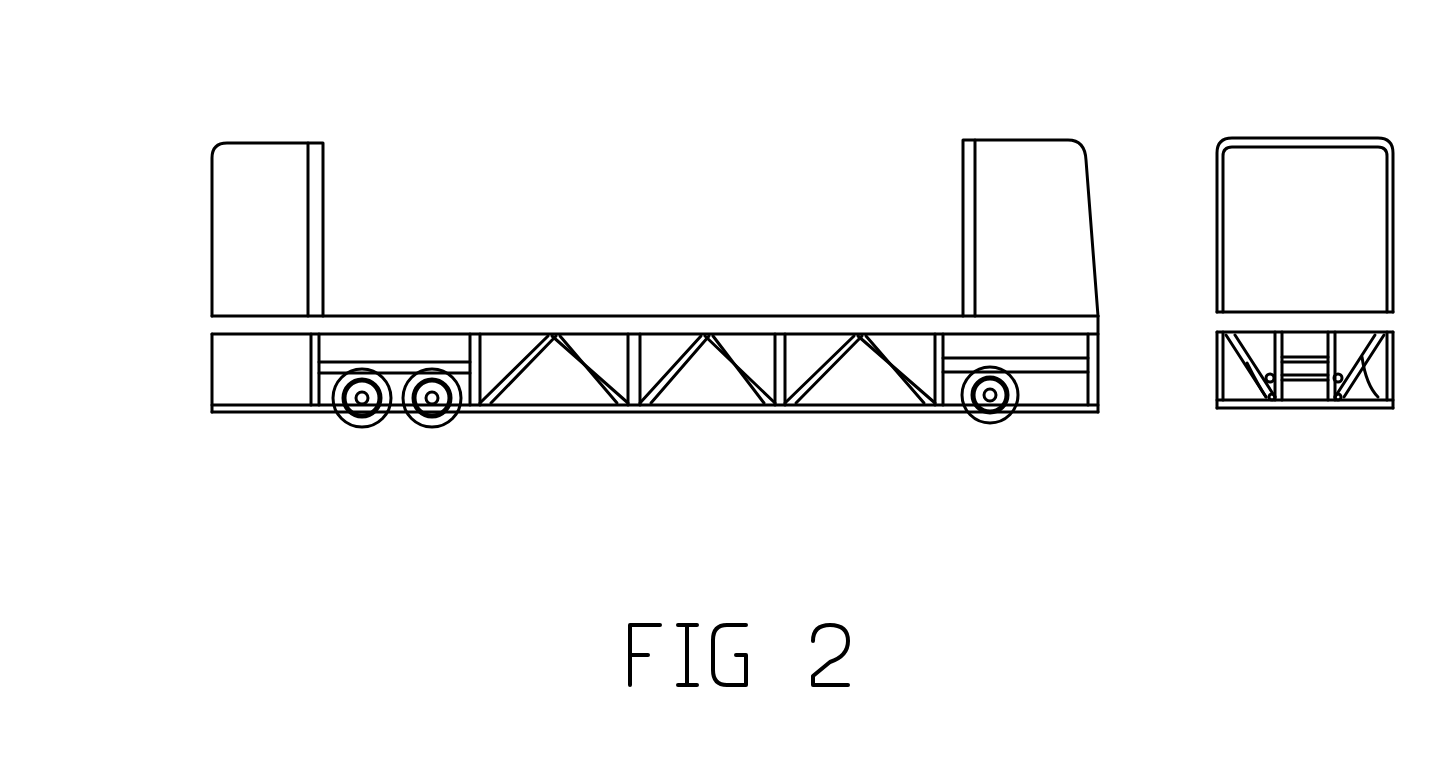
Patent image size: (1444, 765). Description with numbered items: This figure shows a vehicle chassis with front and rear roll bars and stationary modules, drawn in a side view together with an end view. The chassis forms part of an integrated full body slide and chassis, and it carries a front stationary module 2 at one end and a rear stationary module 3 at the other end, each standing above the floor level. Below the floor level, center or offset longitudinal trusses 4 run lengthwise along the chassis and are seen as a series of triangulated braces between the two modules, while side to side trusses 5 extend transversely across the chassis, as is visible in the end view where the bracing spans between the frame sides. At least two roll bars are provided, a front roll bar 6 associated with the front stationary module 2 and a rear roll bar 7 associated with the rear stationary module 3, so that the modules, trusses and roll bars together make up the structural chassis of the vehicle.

The front stationary module 2 is at (1020, 183).
The rear stationary module 3 is at (235, 170).
The longitudinal trusses 4 is at (680, 352).
The side to side trusses 5 is at (648, 405).
The front roll bar 6 is at (967, 198).
The rear roll bar 7 is at (317, 193).